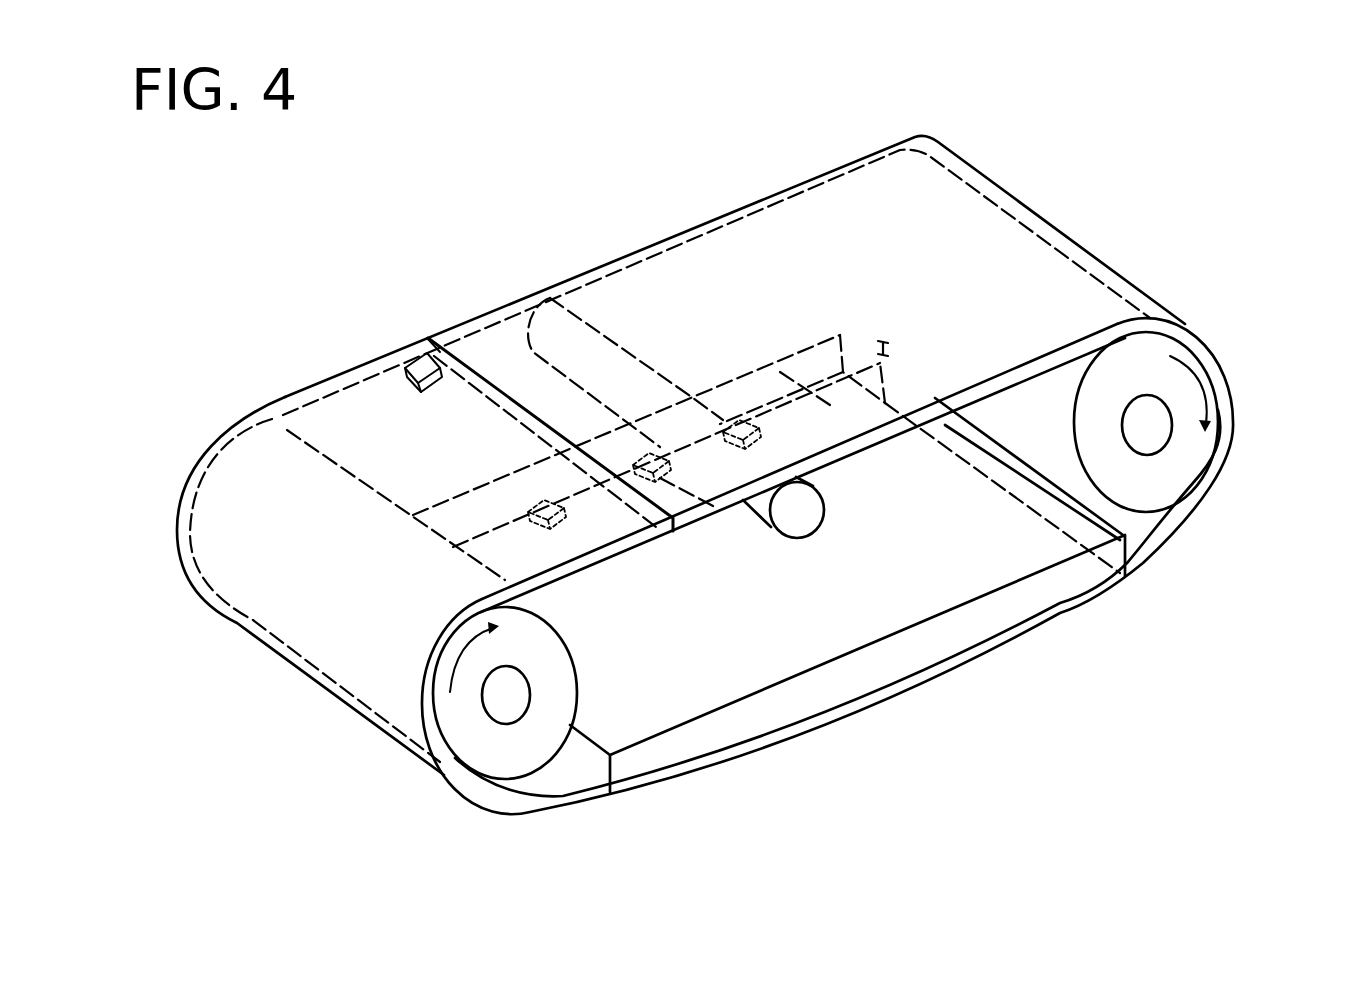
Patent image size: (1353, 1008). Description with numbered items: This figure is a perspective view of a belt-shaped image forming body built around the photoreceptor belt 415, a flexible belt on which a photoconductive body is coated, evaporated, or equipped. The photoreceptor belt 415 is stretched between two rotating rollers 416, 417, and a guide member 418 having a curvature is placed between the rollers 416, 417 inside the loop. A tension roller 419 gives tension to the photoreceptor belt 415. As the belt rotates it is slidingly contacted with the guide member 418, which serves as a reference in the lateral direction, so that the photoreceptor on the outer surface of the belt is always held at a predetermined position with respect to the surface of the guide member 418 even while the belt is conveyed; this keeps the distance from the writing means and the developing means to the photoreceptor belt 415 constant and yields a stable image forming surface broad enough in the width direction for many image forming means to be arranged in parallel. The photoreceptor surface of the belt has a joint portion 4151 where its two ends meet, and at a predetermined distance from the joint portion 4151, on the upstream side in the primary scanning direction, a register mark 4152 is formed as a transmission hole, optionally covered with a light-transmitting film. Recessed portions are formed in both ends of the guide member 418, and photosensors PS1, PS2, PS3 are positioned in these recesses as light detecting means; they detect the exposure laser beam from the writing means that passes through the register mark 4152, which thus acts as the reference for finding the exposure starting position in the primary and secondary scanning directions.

The photoreceptor belt 415 is at (712, 206).
The joint portion 4151 is at (472, 372).
The register mark 4152 is at (413, 355).
The rotating roller 416 is at (475, 768).
The rotating roller 417 is at (1177, 468).
The guide member 418 is at (1037, 607).
The tension roller 419 is at (647, 378).
The photosensor PS1 is at (740, 420).
The photosensor PS2 is at (655, 468).
The photosensor PS3 is at (533, 502).